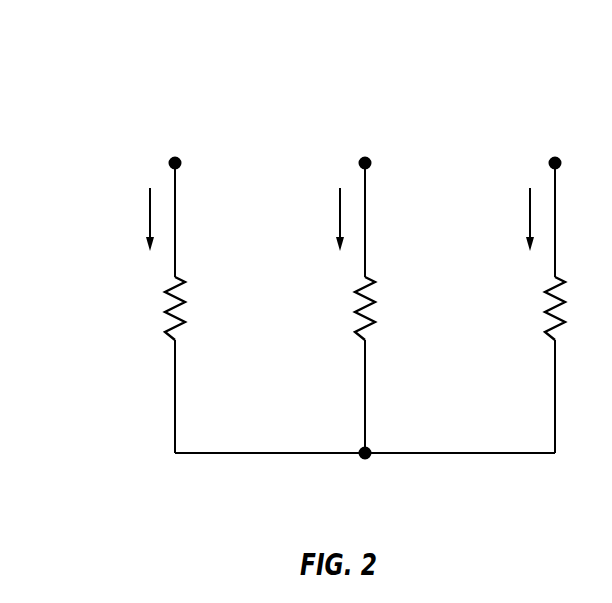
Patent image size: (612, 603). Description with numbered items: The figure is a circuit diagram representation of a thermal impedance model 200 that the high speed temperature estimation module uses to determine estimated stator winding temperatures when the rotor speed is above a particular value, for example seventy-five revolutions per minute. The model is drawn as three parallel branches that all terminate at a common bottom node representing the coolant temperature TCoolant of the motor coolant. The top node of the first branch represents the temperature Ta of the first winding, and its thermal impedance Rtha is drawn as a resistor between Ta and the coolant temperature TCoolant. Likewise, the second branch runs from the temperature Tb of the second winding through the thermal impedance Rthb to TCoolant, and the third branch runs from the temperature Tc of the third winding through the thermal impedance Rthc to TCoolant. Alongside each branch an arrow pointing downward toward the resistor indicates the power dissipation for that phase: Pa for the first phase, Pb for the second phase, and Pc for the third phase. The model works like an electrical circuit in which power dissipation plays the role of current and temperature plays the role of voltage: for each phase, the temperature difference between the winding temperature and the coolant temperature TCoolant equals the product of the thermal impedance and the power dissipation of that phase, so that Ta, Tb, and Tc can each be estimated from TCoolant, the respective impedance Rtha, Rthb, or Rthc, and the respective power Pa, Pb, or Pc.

The thermal impedance model 200 is at (113, 71).
The temperature of the first winding Ta is at (174, 141).
The temperature of the second winding Tb is at (364, 141).
The temperature of the third winding Tc is at (554, 141).
The coolant temperature TCoolant is at (403, 477).
The power dissipation for phase a Pa is at (134, 219).
The power dissipation for phase b Pb is at (318, 219).
The power dissipation for phase c Pc is at (508, 219).
The thermal impedance of the first winding Rtha is at (146, 308).
The thermal impedance of the second winding Rthb is at (336, 308).
The thermal impedance of the third winding Rthc is at (526, 308).